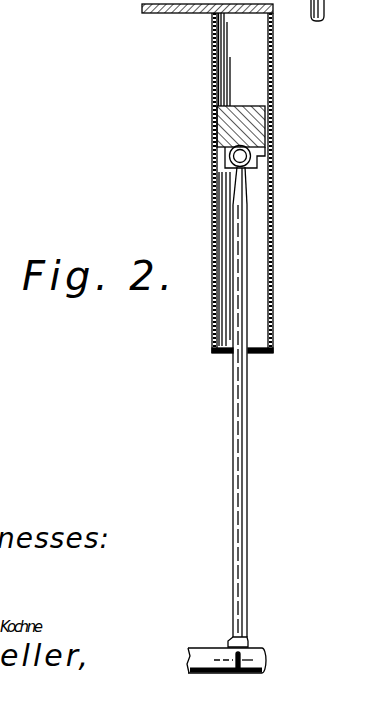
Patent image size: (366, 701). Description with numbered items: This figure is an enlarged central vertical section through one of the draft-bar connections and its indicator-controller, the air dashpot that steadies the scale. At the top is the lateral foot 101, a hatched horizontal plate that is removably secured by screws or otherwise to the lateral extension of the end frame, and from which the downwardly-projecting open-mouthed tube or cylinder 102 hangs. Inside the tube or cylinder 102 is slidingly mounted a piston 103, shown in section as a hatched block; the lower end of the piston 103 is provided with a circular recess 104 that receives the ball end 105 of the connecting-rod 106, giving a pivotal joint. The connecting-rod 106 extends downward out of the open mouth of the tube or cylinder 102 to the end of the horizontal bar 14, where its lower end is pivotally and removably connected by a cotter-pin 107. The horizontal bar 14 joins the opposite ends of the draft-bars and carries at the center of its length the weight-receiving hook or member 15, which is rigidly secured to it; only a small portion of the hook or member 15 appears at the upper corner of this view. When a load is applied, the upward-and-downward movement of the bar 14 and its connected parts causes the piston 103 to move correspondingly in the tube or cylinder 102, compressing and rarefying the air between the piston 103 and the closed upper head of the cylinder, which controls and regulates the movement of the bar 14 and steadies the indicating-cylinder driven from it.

The lateral foot 101 is at (170, 13).
The tube or cylinder 102 is at (270, 240).
The piston 103 is at (250, 123).
The circular recess 104 is at (258, 162).
The ball end 105 is at (237, 157).
The connecting-rod 106 is at (238, 229).
The cotter-pin 107 is at (241, 657).
The horizontal bar 14 is at (208, 661).
The weight-receiving hook or member 15 is at (324, 19).